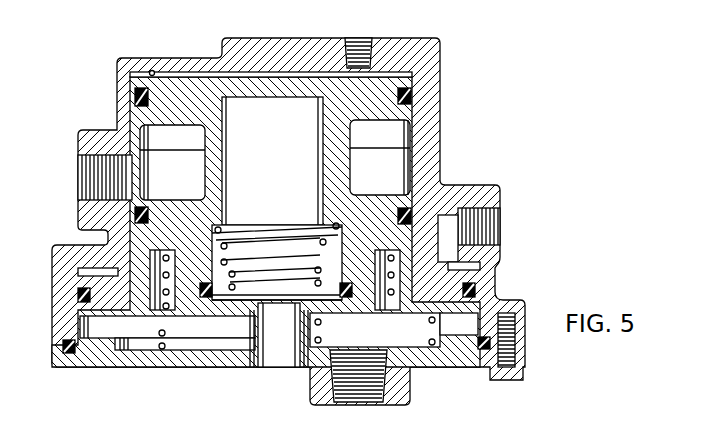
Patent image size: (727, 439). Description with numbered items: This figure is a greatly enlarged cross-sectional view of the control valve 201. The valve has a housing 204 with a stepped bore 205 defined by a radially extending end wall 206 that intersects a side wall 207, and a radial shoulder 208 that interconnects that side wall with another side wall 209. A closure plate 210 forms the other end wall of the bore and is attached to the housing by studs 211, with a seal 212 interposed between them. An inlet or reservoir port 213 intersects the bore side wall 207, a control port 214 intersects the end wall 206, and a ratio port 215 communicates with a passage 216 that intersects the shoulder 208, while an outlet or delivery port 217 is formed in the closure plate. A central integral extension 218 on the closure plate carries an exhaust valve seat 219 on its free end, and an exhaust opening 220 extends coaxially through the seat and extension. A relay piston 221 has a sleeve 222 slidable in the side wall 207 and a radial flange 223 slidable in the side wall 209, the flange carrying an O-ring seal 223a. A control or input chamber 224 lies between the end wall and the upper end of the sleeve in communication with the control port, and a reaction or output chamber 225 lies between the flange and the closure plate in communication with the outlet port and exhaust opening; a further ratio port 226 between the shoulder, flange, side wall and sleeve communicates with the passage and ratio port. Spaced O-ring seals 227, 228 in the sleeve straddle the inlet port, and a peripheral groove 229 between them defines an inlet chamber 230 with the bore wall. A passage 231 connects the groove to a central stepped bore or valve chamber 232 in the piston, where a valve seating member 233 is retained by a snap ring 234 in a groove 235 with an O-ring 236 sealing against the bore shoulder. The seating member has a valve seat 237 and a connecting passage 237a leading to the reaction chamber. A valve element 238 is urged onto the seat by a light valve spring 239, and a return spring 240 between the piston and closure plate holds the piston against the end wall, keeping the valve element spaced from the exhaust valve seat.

The control valve 201 is at (482, 60).
The housing 204 is at (424, 105).
The stepped bore 205 is at (412, 135).
The end wall 206 is at (151, 70).
The side wall 207 is at (412, 160).
The shoulder 208 is at (97, 270).
The side wall 209 is at (80, 320).
The closure plate 210 is at (200, 355).
The studs 211 is at (524, 373).
The seal 212 is at (70, 356).
The inlet port 213 is at (78, 162).
The control port 214 is at (378, 40).
The ratio port 215 is at (500, 210).
The passage 216 is at (448, 218).
The outlet port 217 is at (382, 398).
The extension 218 is at (300, 345).
The exhaust valve seat 219 is at (279, 335).
The exhaust opening 220 is at (258, 360).
The relay piston 221 is at (340, 107).
The sleeve 222 is at (412, 75).
The flange 223 is at (480, 268).
The O-ring seal 223a is at (478, 290).
The control chamber 224 is at (199, 72).
The reaction chamber 225 is at (143, 340).
The ratio port 226 is at (78, 272).
The O-ring seal 227 is at (135, 99).
The O-ring seal 228 is at (150, 215).
The peripheral groove 229 is at (178, 134).
The inlet chamber 230 is at (160, 182).
The passage 231 is at (222, 134).
The valve chamber 232 is at (322, 119).
The valve seating member 233 is at (346, 272).
The snap ring 234 is at (375, 330).
The groove 235 is at (292, 314).
The O-ring 236 is at (179, 280).
The valve seat 237 is at (277, 278).
The connecting passage 237a is at (185, 334).
The valve element 238 is at (273, 251).
The valve spring 239 is at (292, 233).
The return spring 240 is at (454, 330).